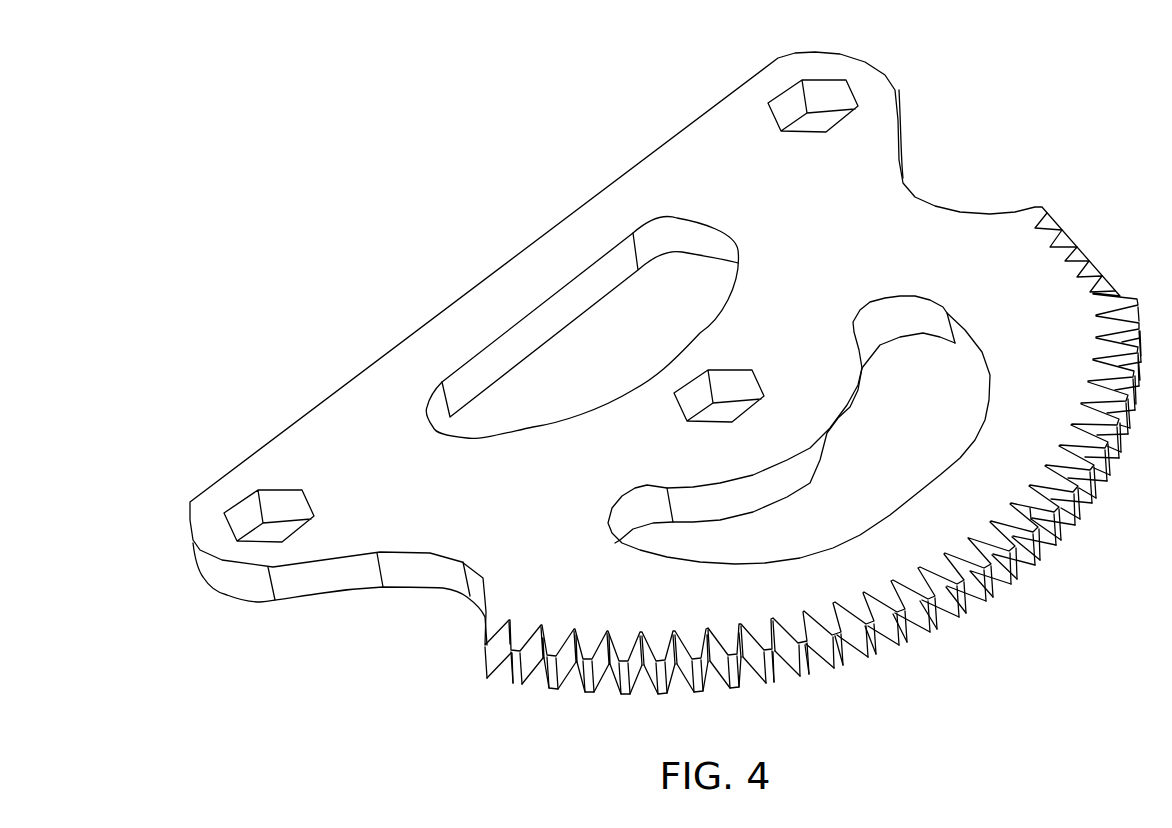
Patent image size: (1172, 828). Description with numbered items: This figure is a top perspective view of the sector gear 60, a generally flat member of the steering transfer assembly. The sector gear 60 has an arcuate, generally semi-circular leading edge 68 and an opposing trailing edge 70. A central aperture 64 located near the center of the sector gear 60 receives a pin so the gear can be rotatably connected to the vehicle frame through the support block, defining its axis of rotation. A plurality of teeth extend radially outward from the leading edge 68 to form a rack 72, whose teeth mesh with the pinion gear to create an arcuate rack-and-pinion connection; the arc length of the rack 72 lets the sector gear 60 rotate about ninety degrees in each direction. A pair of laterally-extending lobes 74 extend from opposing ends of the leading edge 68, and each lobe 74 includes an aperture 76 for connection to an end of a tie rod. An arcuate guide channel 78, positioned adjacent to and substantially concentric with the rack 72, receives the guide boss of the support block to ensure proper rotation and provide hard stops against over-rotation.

The sector gear 60 is at (478, 165).
The central aperture 64 is at (733, 388).
The leading edge 68 is at (803, 676).
The trailing edge 70 is at (333, 390).
The rack 72 is at (1011, 562).
The lobes 74 is at (773, 86).
The aperture 76 is at (825, 97).
The arcuate guide channel 78 is at (722, 538).